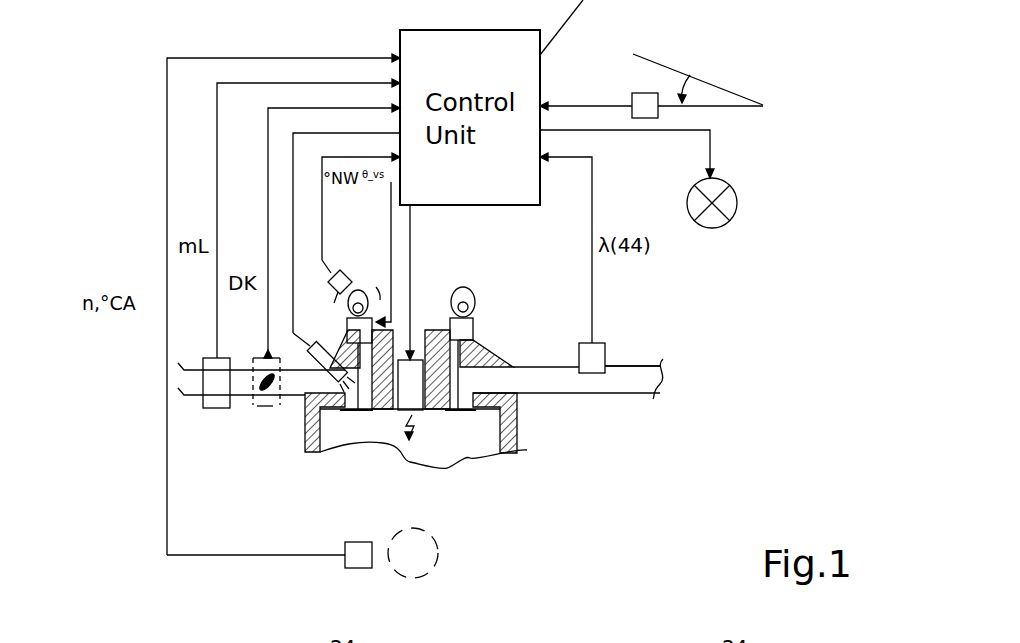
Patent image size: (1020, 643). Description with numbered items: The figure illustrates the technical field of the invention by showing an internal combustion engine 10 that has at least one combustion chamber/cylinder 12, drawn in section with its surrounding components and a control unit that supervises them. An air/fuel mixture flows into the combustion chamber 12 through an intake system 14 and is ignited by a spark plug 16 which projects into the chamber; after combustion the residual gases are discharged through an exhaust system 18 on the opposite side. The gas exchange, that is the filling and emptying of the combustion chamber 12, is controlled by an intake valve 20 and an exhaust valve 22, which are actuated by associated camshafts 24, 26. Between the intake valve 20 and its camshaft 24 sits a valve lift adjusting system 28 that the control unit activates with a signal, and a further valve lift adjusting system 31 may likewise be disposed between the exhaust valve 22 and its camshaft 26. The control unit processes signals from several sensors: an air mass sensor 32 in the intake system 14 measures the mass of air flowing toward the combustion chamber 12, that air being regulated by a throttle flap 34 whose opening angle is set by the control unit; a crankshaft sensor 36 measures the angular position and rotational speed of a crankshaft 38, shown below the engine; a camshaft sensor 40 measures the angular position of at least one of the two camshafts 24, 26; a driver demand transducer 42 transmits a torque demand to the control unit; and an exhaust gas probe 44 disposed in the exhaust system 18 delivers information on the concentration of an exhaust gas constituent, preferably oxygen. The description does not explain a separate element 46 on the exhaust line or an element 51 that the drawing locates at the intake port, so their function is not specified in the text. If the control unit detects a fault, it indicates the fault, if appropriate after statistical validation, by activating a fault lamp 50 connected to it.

The internal combustion engine 10 is at (540, 535).
The combustion chamber/cylinder 12 is at (487, 448).
The intake system 14 is at (252, 440).
The spark plug 16 is at (416, 358).
The exhaust system 18 is at (622, 430).
The intake valve 20 is at (345, 412).
The exhaust valve 22 is at (452, 412).
The camshaft 24 is at (358, 290).
The camshaft 26 is at (467, 289).
The valve lift adjusting system 28 is at (347, 327).
The valve lift adjusting system 31 is at (475, 327).
The air mass sensor 32 is at (207, 408).
The throttle flap 34 is at (268, 384).
The crankshaft sensor 36 is at (362, 542).
The crankshaft 38 is at (438, 542).
The camshaft sensor 40 is at (340, 270).
The driver demand transducer 42 is at (632, 97).
The exhaust gas probe 44 is at (605, 343).
The exhaust gas catalytic converter line 46 is at (632, 365).
The fault lamp 50 is at (735, 193).
The fuel injector 51 is at (310, 346).